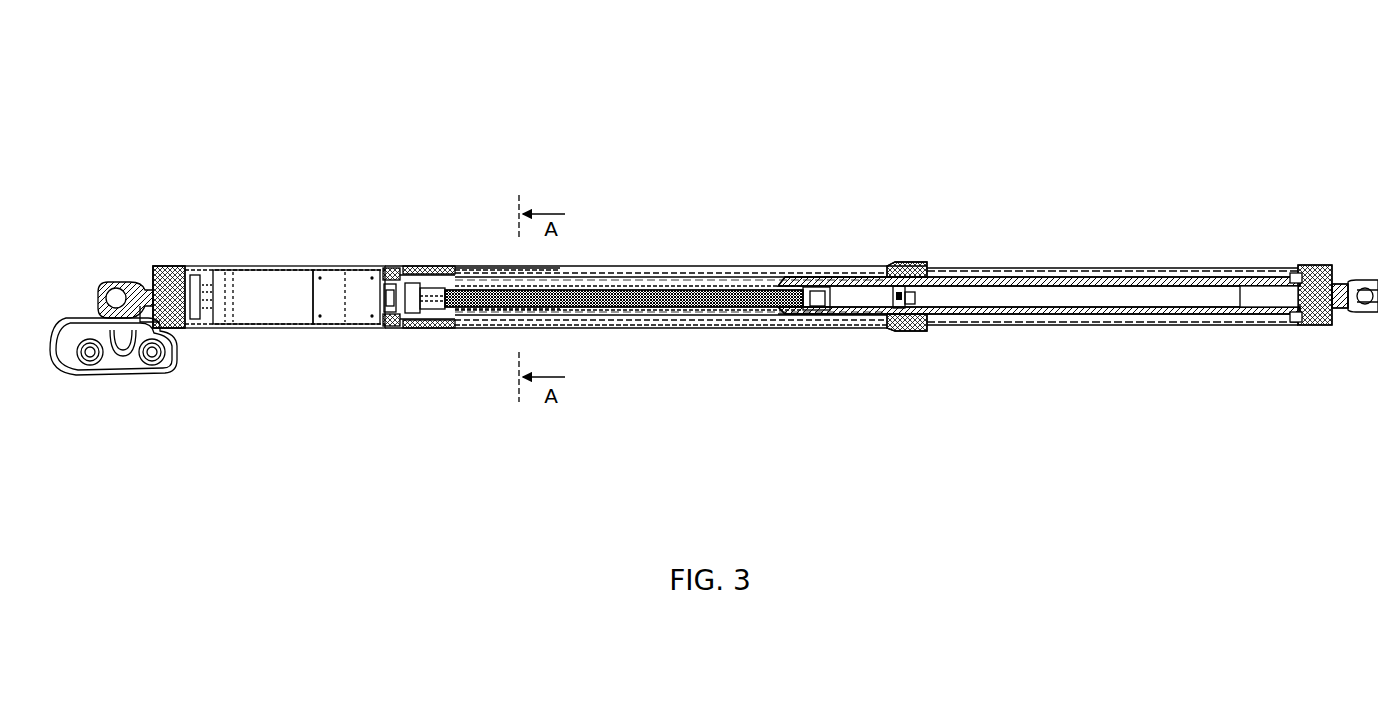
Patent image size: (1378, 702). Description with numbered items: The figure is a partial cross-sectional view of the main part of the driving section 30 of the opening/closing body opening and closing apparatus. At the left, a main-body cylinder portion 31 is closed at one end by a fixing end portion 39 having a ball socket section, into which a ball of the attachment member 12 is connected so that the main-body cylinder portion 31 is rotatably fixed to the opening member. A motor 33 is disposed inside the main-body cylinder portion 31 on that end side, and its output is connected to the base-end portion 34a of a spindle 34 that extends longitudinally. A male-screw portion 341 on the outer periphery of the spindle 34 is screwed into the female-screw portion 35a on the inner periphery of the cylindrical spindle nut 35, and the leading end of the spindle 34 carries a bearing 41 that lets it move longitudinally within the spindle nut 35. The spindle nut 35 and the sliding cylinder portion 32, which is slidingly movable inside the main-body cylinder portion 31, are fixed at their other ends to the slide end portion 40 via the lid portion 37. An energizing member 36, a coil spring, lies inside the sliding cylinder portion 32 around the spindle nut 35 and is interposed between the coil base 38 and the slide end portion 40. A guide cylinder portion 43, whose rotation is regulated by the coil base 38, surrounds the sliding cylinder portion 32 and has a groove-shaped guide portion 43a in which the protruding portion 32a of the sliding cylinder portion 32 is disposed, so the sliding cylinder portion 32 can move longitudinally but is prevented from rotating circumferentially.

The driving section 30 is at (752, 52).
The attachment member 12 is at (122, 366).
The fixing end portion 39 is at (168, 265).
The main-body cylinder portion 31 is at (350, 263).
The motor 33 is at (281, 285).
The coil base 38 is at (440, 265).
The base-end portion 34a is at (418, 330).
The guide portion 43a is at (477, 265).
The guide cylinder portion 43 is at (610, 334).
The energizing member 36 is at (687, 275).
The spindle 34 is at (627, 290).
The male-screw portion 341 is at (673, 309).
The bearing 41 is at (825, 287).
The sliding cylinder portion 32 is at (1005, 268).
The protruding portion 32a is at (843, 265).
The spindle nut 35 is at (1073, 270).
The female-screw portion 35a is at (803, 315).
The lid portion 37 is at (1300, 324).
The slide end portion 40 is at (1358, 278).